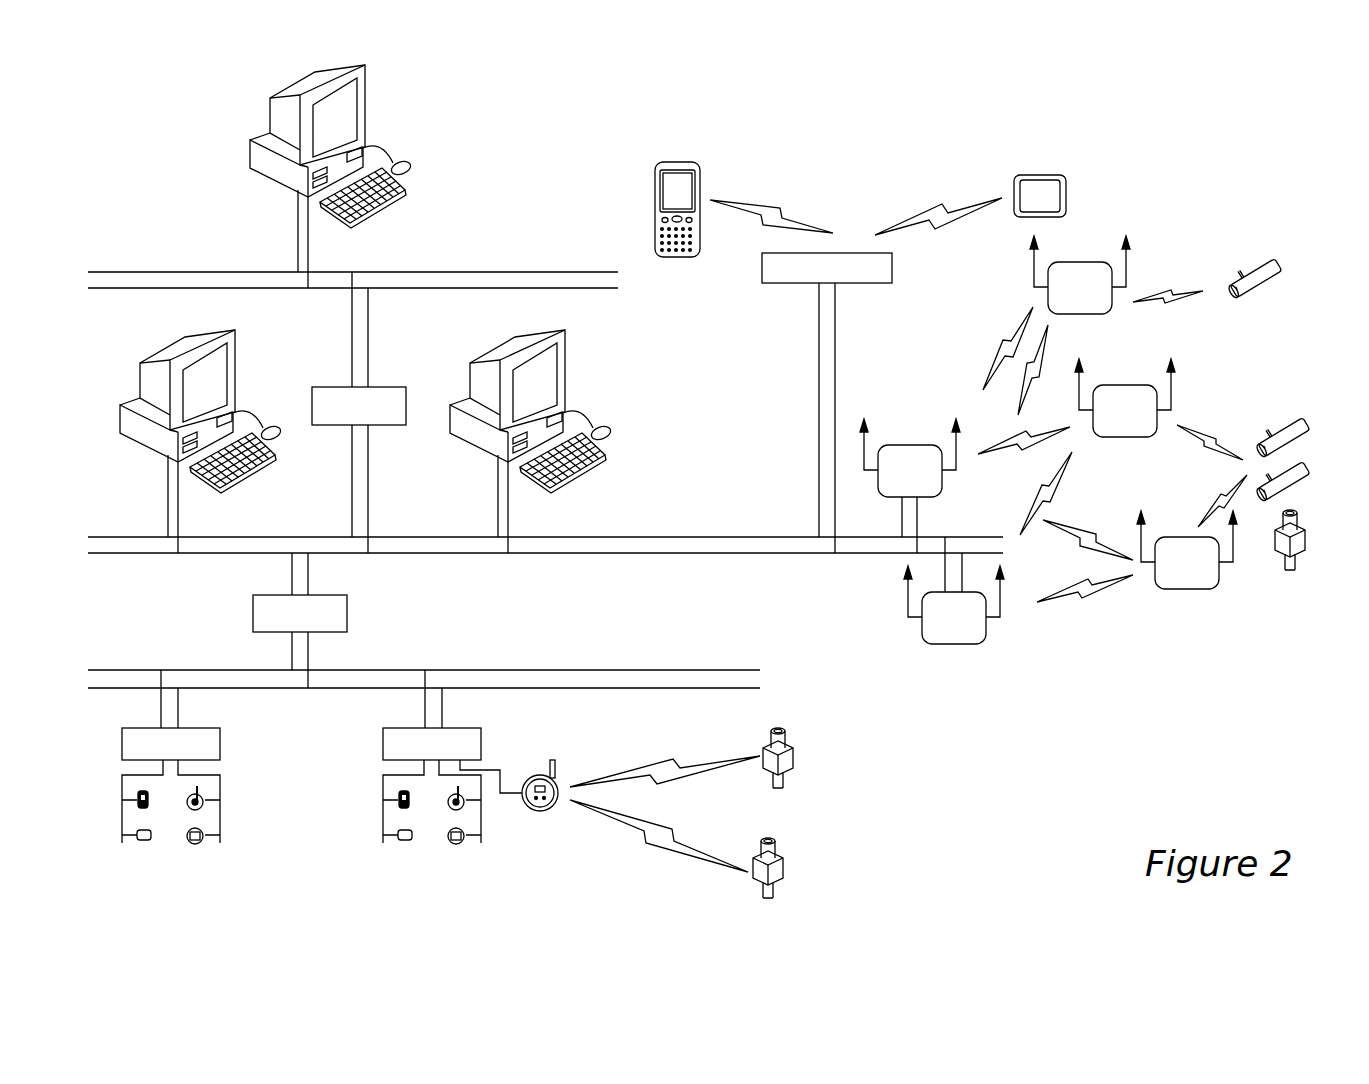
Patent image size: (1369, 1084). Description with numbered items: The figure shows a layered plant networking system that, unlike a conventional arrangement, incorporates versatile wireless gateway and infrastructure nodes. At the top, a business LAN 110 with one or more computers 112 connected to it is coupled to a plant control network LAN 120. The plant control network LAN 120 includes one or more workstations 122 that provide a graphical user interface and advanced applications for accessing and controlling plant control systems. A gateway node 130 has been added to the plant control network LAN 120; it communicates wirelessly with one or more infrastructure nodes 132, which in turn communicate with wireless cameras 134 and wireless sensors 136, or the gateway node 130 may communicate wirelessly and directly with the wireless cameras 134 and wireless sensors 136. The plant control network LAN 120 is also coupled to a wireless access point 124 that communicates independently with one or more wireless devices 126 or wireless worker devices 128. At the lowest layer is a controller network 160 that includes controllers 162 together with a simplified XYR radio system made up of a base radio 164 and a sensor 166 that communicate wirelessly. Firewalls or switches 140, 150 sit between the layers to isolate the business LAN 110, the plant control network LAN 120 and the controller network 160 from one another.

The business LAN 110 is at (525, 272).
The computers 112 is at (365, 100).
The plant control network LAN 120 is at (585, 553).
The workstations 122 is at (235, 365).
The wireless access point 124 is at (868, 283).
The wireless devices 126 is at (682, 162).
The wireless worker devices 128 is at (1040, 175).
The gateway node 130 is at (908, 445).
The infrastructure nodes 132 is at (1095, 262).
The wireless cameras 134 is at (1290, 420).
The wireless sensors 136 is at (1290, 572).
The firewall or switch 140 is at (390, 387).
The firewall or switch 150 is at (347, 612).
The controller network 160 is at (695, 670).
The controllers 162 is at (220, 737).
The base radio 164 is at (557, 780).
The sensor 166 is at (793, 728).